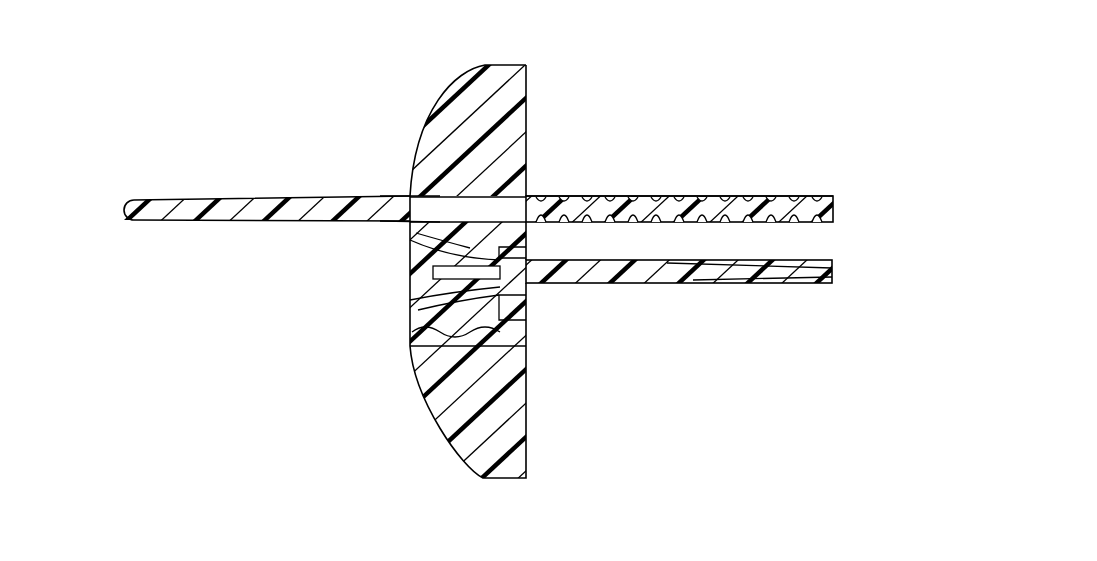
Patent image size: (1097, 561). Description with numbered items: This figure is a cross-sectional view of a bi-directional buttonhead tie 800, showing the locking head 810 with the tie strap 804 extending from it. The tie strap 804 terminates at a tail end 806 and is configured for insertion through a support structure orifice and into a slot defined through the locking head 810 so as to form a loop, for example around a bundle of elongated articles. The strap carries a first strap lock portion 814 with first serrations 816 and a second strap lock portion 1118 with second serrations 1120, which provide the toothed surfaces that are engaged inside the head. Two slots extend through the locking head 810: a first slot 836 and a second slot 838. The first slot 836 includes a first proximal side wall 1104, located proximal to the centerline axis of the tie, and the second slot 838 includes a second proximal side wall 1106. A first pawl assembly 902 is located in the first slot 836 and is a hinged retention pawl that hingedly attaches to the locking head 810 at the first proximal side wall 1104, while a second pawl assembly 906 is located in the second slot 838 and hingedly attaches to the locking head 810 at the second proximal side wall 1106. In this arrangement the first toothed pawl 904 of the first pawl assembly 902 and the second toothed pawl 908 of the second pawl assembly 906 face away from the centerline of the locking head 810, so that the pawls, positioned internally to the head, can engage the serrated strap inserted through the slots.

The bi-directional buttonhead tie 800 is at (322, 88).
The tie strap 804 is at (450, 280).
The tail end 806 is at (126, 206).
The locking head 810 is at (462, 88).
The first strap lock portion 814 is at (450, 280).
The first serrations 816 is at (778, 222).
The first slot 836 is at (514, 235).
The second slot 838 is at (518, 330).
The first pawl assembly 902 is at (440, 237).
The first toothed pawl 904 is at (435, 210).
The second pawl assembly 906 is at (422, 325).
The second toothed pawl 908 is at (420, 367).
The first proximal side wall 1104 is at (438, 268).
The second proximal side wall 1106 is at (440, 290).
The second strap lock portion 1118 is at (757, 185).
The second serrations 1120 is at (790, 197).